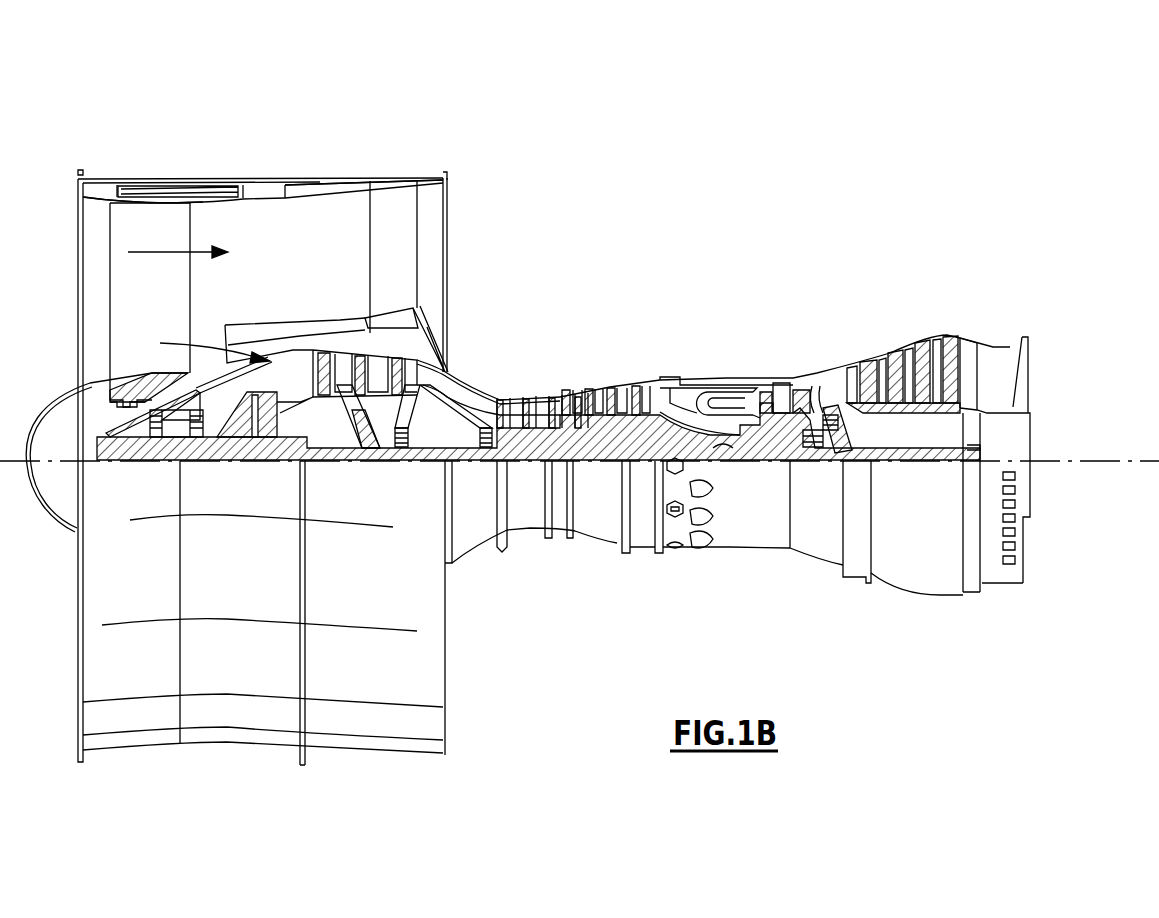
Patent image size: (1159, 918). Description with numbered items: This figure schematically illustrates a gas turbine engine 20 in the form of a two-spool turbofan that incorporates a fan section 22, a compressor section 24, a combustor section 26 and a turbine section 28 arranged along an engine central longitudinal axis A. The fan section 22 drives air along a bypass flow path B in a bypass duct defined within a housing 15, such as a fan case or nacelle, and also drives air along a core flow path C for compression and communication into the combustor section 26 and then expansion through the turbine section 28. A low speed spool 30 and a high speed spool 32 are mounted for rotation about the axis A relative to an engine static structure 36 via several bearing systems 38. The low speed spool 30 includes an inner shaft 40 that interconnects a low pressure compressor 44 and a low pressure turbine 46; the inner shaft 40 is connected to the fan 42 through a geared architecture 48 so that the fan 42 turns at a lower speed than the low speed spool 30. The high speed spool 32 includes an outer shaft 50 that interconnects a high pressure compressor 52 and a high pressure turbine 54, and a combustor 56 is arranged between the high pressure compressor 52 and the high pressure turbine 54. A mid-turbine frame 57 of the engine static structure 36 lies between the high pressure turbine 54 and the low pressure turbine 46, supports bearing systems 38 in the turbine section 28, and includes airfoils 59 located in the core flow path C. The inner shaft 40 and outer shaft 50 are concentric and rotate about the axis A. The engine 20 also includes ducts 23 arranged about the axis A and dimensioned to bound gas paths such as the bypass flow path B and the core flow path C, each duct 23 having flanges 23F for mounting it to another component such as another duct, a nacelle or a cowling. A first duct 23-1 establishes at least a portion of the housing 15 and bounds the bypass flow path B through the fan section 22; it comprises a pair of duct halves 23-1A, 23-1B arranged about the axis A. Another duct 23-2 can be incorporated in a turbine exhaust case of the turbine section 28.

The gas turbine engine 20 is at (722, 228).
The fan section 22 is at (192, 174).
The housing 15 is at (260, 178).
The ducts 23 is at (128, 178).
The first duct 23-1 is at (308, 178).
The duct half 23-1A is at (364, 182).
The duct half 23-1B is at (327, 752).
The duct 23-2 is at (1000, 345).
The flanges 23F is at (447, 173).
The compressor section 24 is at (494, 377).
The combustor section 26 is at (713, 358).
The turbine section 28 is at (863, 327).
The low speed spool 30 is at (600, 462).
The high speed spool 32 is at (640, 430).
The engine static structure 36 is at (640, 548).
The bearing systems 38 is at (404, 460).
The inner shaft 40 is at (463, 463).
The fan 42 is at (164, 304).
The low pressure compressor 44 is at (380, 370).
The low pressure turbine 46 is at (905, 350).
The geared architecture 48 is at (267, 440).
The outer shaft 50 is at (728, 450).
The high pressure compressor 52 is at (580, 390).
The high pressure turbine 54 is at (783, 383).
The combustor 56 is at (717, 405).
The mid-turbine frame 57 is at (823, 371).
The airfoils 59 is at (848, 412).
The engine central longitudinal axis A is at (1110, 461).
The bypass flow path B is at (163, 250).
The core flow path C is at (207, 345).